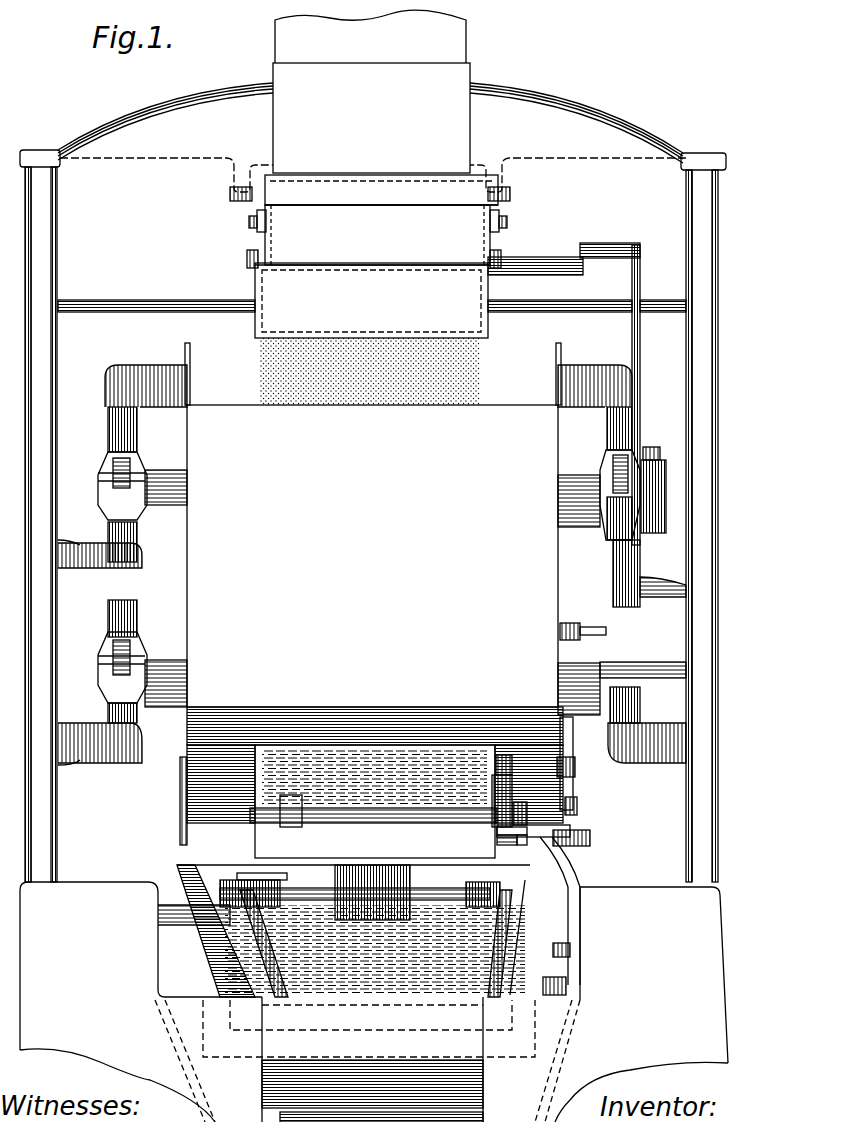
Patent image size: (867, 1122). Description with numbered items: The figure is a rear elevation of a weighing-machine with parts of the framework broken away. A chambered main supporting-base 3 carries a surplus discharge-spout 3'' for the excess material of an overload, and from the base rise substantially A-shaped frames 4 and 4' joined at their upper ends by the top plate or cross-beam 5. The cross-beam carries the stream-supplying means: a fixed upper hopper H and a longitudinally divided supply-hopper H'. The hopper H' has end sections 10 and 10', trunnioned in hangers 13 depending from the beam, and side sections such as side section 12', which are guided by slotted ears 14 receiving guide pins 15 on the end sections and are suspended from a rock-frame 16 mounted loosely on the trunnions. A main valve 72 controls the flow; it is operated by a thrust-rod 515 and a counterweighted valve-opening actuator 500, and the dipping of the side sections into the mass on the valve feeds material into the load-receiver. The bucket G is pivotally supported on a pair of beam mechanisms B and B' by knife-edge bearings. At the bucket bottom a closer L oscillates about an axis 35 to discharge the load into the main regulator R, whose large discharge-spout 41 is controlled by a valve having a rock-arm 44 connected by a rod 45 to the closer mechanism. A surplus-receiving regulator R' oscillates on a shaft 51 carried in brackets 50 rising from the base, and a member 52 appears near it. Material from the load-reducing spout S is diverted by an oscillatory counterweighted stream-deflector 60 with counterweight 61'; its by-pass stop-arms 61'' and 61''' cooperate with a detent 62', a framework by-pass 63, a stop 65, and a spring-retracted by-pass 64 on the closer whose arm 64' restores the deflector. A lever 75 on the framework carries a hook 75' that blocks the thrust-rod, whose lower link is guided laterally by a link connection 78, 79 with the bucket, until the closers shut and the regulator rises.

The main supporting-base 3 is at (374, 1002).
The discharge-spout for surplus material 3'' is at (352, 1091).
The A-shaped frame 4 is at (690, 517).
The A-shaped frame 4' is at (49, 516).
The top plate or cross-beam 5 is at (372, 137).
The end hopper-section 10 is at (499, 250).
The end hopper-section 10' is at (241, 251).
The side hopper-section 12' is at (372, 279).
The hanger or bracket 13 is at (236, 175).
The slotted ear or guide member 14 is at (263, 217).
The guide pin or screw 15 is at (252, 222).
The rock-frame 16 is at (365, 195).
The closer axis 35 is at (575, 767).
The discharge-spout of main regulator 41 is at (518, 1058).
The rock-arm 44 is at (565, 986).
The rod 45 is at (565, 962).
The bracket 50 is at (262, 990).
The shaft 51 is at (455, 908).
The bar 52 is at (490, 945).
The stream-deflector 60 is at (373, 823).
The counterweight 61' is at (489, 830).
The stop-arm 61'' is at (471, 798).
The stop-arm 61''' is at (491, 848).
The detent 62' is at (492, 731).
The by-pass stop 63 is at (590, 837).
The by-pass 64 is at (560, 796).
The arm 64' is at (538, 905).
The stop 65 is at (498, 840).
The valve 72 is at (371, 300).
The lever 75 is at (647, 725).
The hook 75' is at (659, 605).
The link connection 78 is at (575, 624).
The link connection 79 is at (585, 635).
The valve-opening actuator or counterweighted lever 500 is at (652, 447).
The thrust-rod 515 is at (632, 333).
The beam mechanism B is at (122, 466).
The beam mechanism B' is at (122, 681).
The bucket or load-receiver G is at (373, 525).
The upper hopper or supply-spout H is at (371, 91).
The supply-hopper H' is at (381, 220).
The closer L is at (180, 836).
The main regulator R is at (353, 931).
The surplus-receiving regulator R' is at (375, 937).
The load-reducing spout S is at (375, 801).